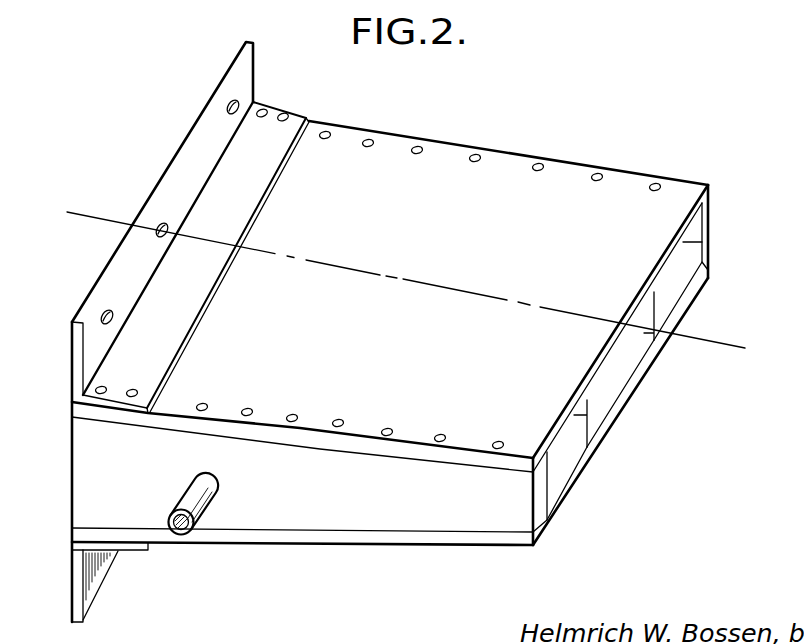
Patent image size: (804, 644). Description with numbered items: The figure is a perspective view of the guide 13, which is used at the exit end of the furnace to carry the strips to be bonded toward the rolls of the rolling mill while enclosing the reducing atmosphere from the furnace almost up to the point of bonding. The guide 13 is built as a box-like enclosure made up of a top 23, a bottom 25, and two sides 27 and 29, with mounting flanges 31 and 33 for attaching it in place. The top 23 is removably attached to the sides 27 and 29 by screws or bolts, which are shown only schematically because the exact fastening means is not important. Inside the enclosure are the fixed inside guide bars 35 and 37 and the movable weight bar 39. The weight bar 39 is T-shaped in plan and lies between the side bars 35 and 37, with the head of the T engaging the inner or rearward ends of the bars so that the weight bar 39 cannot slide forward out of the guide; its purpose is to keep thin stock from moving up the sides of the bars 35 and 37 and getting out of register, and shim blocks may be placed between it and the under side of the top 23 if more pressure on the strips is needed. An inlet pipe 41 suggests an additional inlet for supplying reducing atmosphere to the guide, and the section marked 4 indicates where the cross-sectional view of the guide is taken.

The guide 13 is at (390, 334).
The top 23 is at (428, 261).
The bottom 25 is at (432, 546).
The side 27 is at (306, 513).
The side 29 is at (642, 365).
The mounting flange 31 is at (170, 160).
The mounting flange 33 is at (74, 613).
The fixed inside guide bar 35 is at (568, 471).
The fixed inside guide bar 37 is at (678, 292).
The movable weight bar 39 is at (623, 380).
The inlet pipe 41 is at (183, 498).
The section line 4- 4 is at (86, 191).